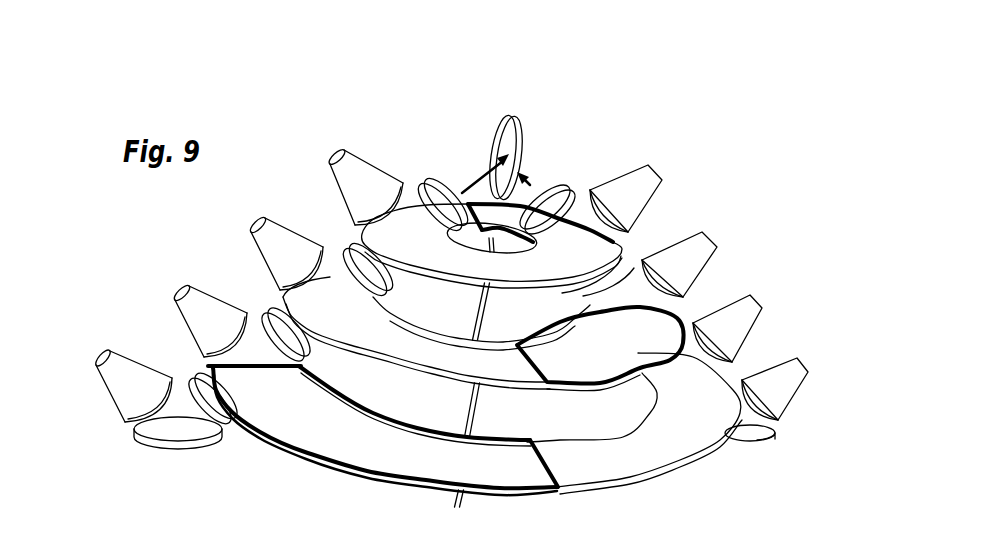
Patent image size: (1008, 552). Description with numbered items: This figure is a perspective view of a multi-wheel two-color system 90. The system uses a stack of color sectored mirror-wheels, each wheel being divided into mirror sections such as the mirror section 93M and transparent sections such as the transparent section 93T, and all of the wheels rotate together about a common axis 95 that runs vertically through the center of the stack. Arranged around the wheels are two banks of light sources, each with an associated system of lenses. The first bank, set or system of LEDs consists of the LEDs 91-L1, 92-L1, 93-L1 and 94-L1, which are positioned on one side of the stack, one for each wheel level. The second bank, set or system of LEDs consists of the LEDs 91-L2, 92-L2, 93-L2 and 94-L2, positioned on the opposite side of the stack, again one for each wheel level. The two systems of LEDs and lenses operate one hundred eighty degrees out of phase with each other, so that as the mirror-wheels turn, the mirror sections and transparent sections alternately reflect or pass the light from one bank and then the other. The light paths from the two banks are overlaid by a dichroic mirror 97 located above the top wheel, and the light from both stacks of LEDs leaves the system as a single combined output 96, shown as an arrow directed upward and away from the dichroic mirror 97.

The multi-wheel two-color system 90 is at (220, 472).
The LED 91-L1 is at (652, 190).
The LED 91-L2 is at (336, 179).
The LED 92-L1 is at (702, 258).
The LED 92-L2 is at (260, 246).
The LED 93-L1 is at (752, 322).
The LED 93-L2 is at (178, 312).
The LED 94-L1 is at (788, 376).
The LED 94-L2 is at (121, 373).
The mirror section 93M is at (403, 451).
The transparent section 93T is at (659, 450).
The axis 95 is at (438, 500).
The combined output 96 is at (503, 158).
The dichroic mirror 97 is at (531, 134).